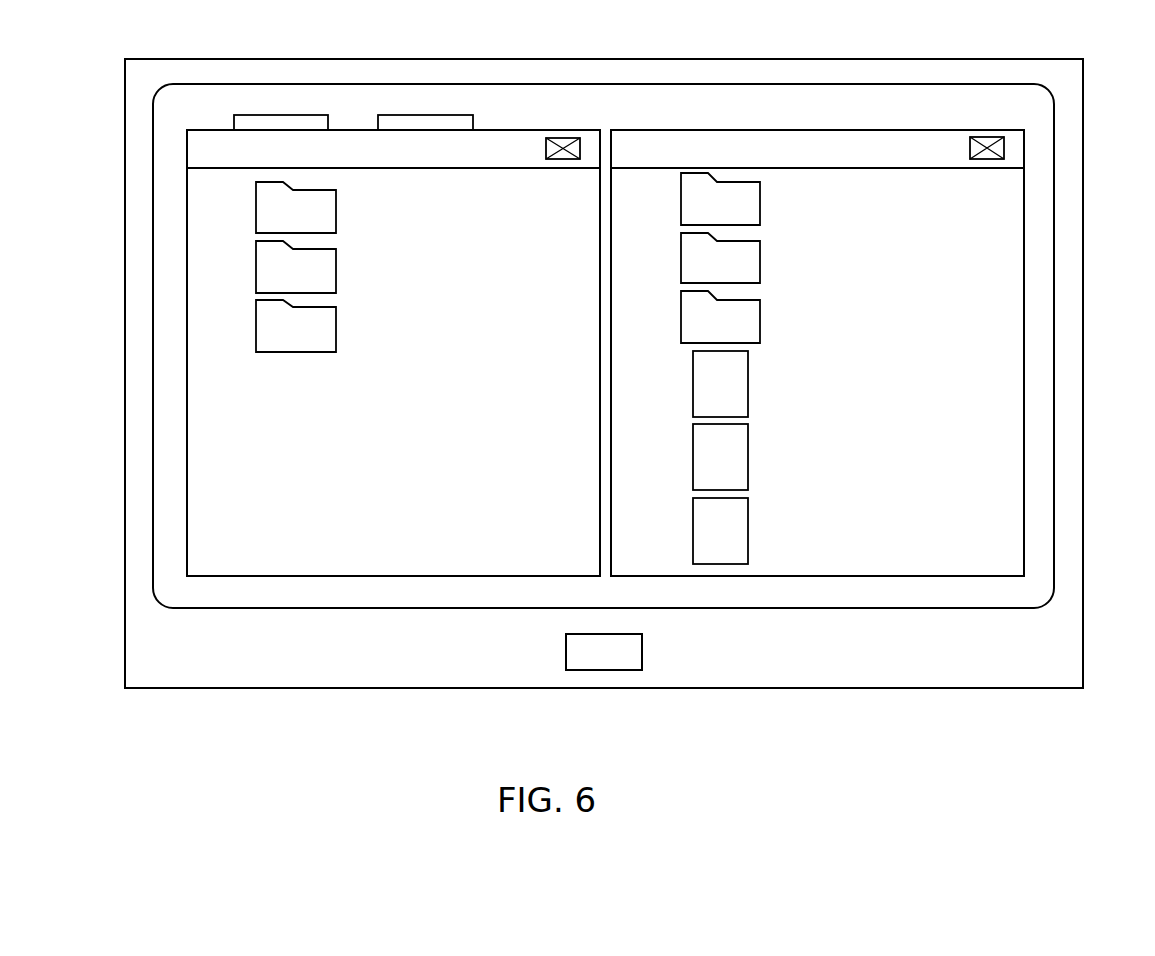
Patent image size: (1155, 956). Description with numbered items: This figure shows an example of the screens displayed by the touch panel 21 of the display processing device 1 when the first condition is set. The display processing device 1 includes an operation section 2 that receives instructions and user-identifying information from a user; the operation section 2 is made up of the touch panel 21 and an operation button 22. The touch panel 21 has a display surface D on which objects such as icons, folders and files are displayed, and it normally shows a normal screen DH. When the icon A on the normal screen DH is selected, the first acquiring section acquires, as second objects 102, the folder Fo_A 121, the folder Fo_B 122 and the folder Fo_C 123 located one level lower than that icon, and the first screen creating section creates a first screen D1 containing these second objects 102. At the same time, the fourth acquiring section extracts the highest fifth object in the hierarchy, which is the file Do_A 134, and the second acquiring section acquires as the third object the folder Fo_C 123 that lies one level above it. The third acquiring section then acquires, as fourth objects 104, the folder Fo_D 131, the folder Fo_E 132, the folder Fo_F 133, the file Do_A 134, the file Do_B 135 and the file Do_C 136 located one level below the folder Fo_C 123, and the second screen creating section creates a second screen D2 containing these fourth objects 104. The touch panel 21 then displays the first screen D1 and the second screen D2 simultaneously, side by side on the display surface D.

The display processing device 1 is at (1108, 90).
The operation section 2 is at (722, 743).
The touch panel 21 is at (716, 608).
The display surface D is at (603, 415).
The operation button 22 is at (603, 653).
The normal screen DH is at (795, 100).
The first screen D1 is at (202, 348).
The second screen D2 is at (1005, 348).
The second objects 102 is at (363, 267).
The fourth objects 104 is at (788, 368).
The folder "Fo_A" 121 is at (336, 212).
The folder "Fo_B" 122 is at (336, 271).
The folder "Fo_C" 123 is at (336, 329).
The folder "Fo_D" 131 is at (760, 202).
The folder "Fo_E" 132 is at (760, 262).
The folder "Fo_F" 133 is at (760, 320).
The file "Do_A" 134 is at (748, 384).
The file "Do_B" 135 is at (748, 457).
The file "Do_C" 136 is at (748, 531).